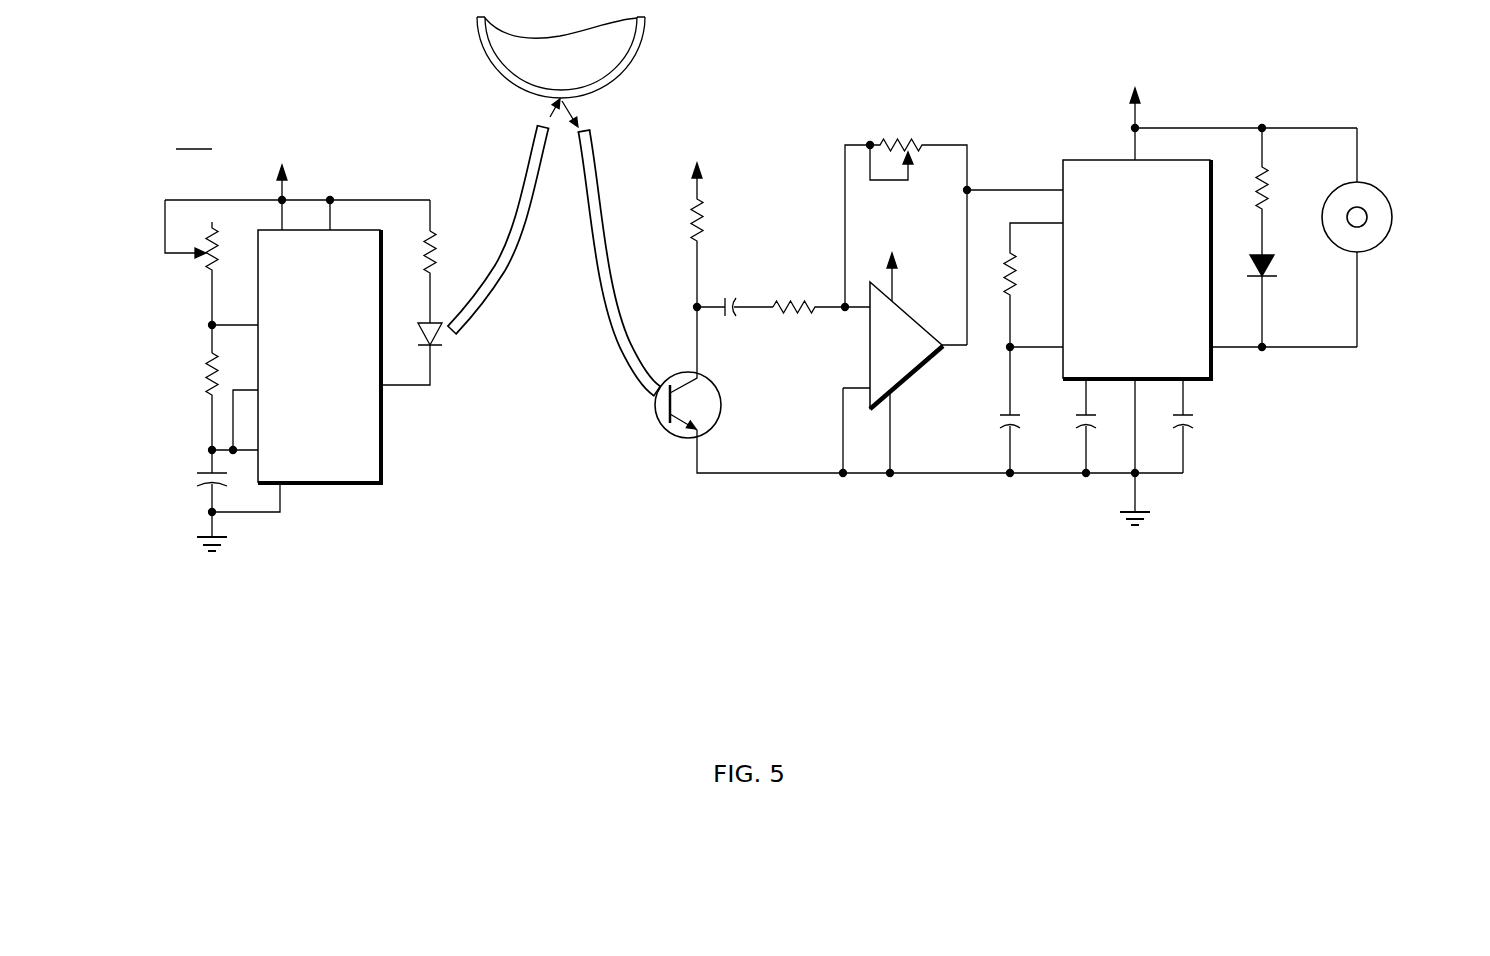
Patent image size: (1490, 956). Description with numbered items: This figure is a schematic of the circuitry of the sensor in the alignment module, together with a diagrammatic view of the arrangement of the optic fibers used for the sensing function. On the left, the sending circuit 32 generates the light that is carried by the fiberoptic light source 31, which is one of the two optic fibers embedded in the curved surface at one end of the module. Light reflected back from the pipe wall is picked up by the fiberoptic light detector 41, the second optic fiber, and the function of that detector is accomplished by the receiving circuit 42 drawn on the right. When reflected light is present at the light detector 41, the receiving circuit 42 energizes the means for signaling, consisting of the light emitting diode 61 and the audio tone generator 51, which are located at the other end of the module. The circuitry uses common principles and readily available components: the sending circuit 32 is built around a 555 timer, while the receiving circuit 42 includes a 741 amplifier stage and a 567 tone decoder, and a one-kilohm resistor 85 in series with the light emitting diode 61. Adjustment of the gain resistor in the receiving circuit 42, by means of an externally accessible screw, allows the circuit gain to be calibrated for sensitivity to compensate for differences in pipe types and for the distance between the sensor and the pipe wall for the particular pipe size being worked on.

The fiberoptic light source 31 is at (535, 127).
The fiberoptic light detector 41 is at (589, 128).
The sending circuit 32 is at (492, 598).
The receiving circuit 42 is at (1410, 595).
The audio tone generator 51 is at (1387, 235).
The light emitting diode 61 is at (1272, 262).
The 1K resistor 85 is at (1241, 191).
The 555 timer IC 555 is at (337, 321).
The 567 tone decoder IC 567 is at (1155, 256).
The 741 operational amplifier 741 is at (905, 342).